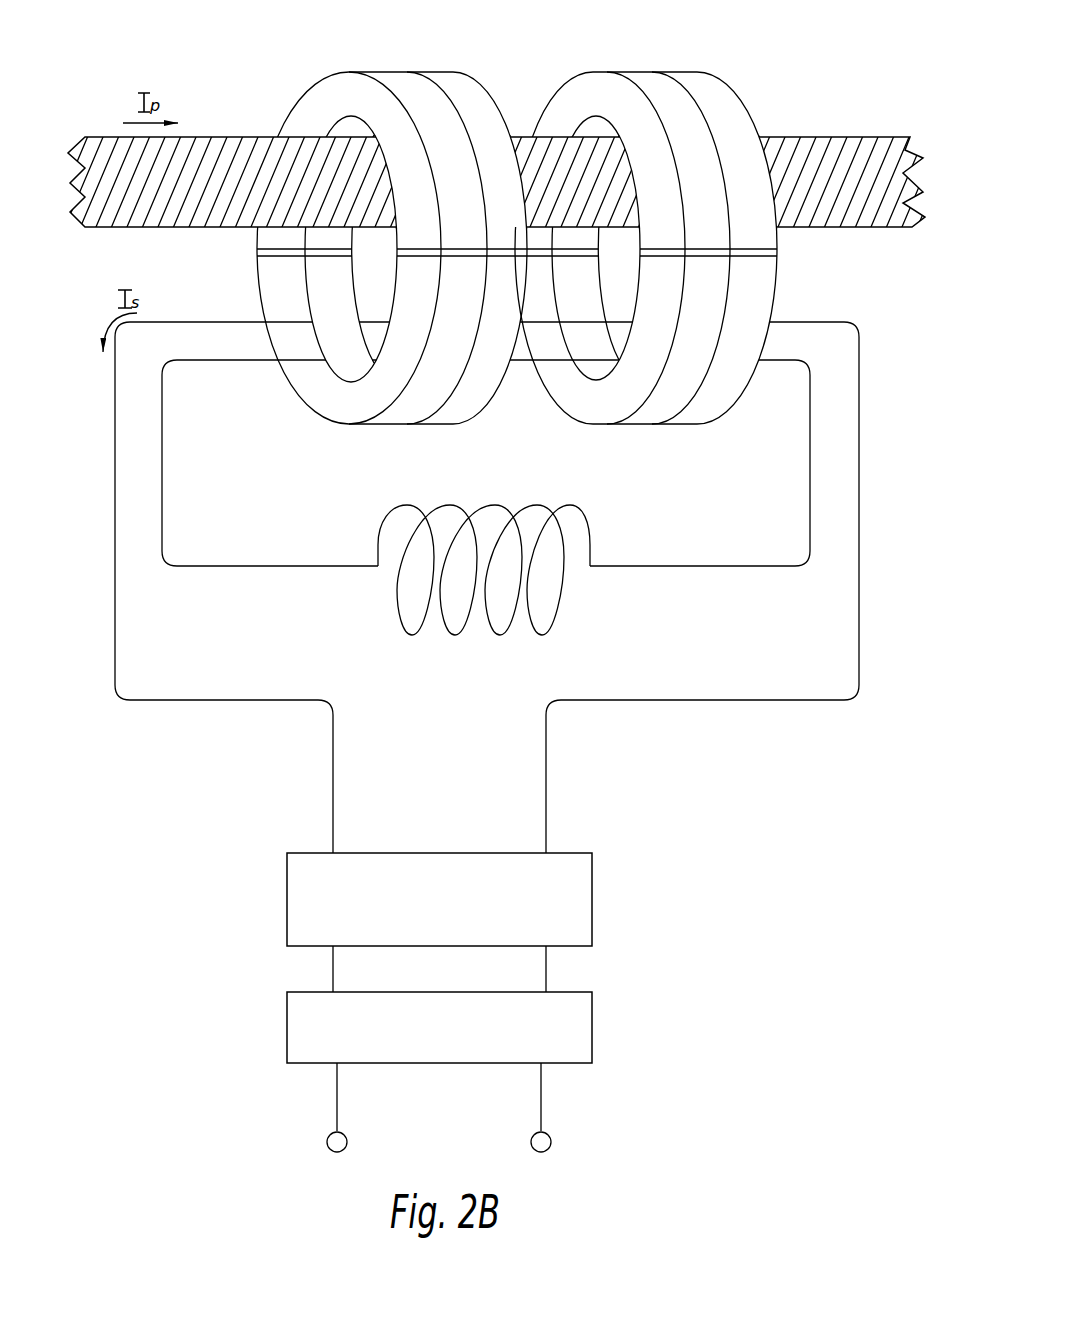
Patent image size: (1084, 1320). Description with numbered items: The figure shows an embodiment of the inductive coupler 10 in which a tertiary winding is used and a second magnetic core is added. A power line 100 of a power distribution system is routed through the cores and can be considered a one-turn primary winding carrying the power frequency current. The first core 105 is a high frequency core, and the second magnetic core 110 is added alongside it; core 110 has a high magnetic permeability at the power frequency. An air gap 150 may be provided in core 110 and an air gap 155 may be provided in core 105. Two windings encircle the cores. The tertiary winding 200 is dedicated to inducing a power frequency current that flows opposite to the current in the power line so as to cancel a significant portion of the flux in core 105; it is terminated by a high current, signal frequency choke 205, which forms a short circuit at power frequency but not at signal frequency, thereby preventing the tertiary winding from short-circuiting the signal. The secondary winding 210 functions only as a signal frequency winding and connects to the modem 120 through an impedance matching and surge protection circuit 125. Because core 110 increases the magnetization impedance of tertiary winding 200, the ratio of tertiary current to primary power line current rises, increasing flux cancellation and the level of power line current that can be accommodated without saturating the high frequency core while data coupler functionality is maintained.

The inductive coupler 10 is at (642, 53).
The power line 100 is at (855, 135).
The core 105 is at (497, 94).
The second magnetic core 110 is at (743, 92).
The air gap 150 is at (782, 253).
The air gap 155 is at (257, 254).
The tertiary winding 200 is at (786, 364).
The signal frequency choke 205 is at (600, 521).
The secondary winding 210 is at (797, 318).
The impedance matching and surge protection circuit 125 is at (597, 897).
The modem 120 is at (597, 1022).